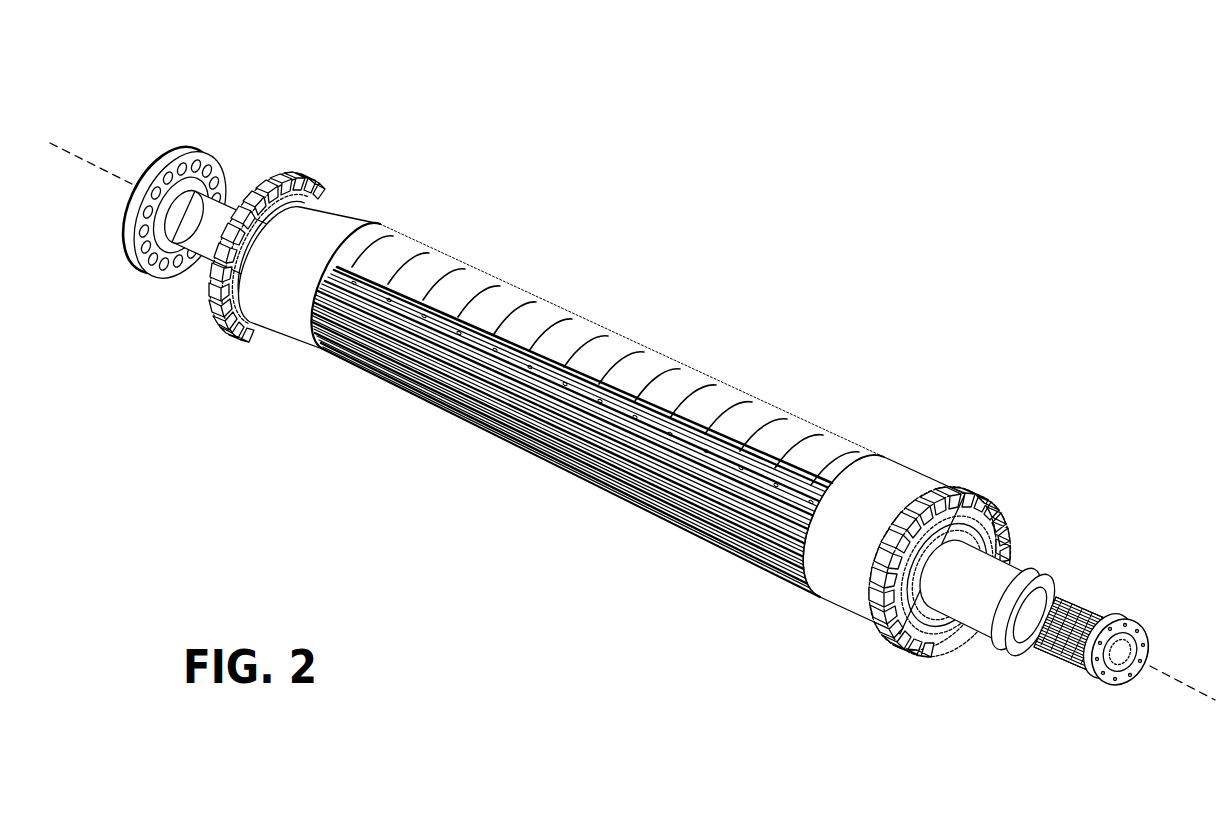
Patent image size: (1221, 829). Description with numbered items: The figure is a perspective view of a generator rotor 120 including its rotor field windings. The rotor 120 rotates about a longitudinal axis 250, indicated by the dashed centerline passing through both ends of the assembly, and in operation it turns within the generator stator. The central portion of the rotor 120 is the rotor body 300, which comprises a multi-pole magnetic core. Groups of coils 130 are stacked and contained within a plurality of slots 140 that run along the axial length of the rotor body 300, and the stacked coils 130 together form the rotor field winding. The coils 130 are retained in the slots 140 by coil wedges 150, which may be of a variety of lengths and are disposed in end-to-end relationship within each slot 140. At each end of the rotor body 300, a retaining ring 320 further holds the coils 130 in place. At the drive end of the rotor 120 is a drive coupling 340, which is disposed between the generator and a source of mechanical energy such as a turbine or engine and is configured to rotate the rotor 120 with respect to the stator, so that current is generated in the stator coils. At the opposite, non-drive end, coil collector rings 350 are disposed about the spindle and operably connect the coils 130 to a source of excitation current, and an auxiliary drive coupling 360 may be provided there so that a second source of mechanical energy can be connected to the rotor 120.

The rotor 120 is at (671, 229).
The coils 130 is at (513, 410).
The slots 140 is at (460, 387).
The coil wedges 150 is at (573, 427).
The longitudinal axis 250 is at (73, 153).
The rotor body 300 is at (597, 431).
The retaining rings 320 is at (298, 328).
The drive coupling 340 is at (222, 139).
The coil collector rings 350 is at (1063, 652).
The auxiliary drive coupling 360 is at (1122, 663).